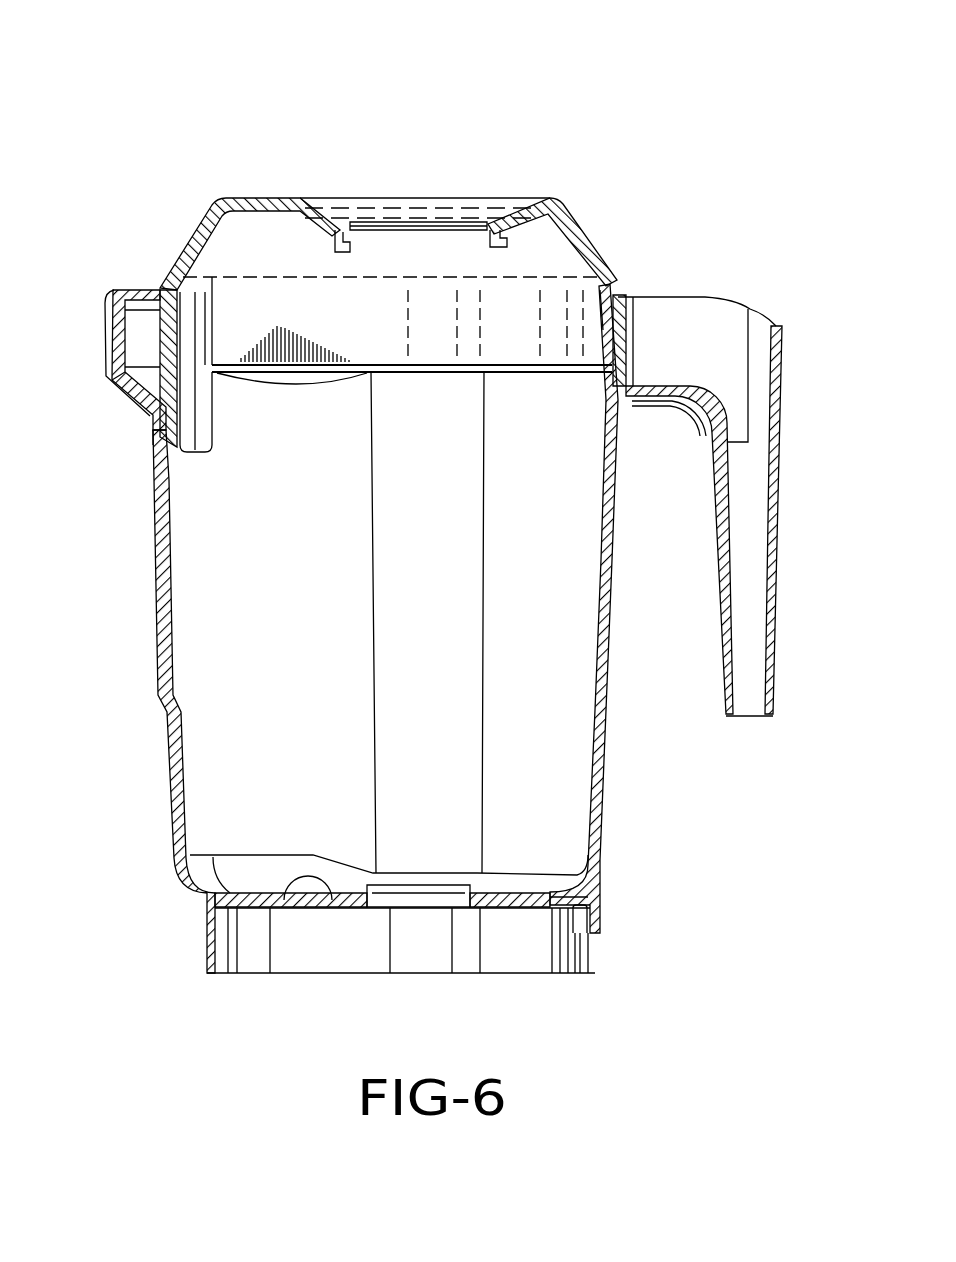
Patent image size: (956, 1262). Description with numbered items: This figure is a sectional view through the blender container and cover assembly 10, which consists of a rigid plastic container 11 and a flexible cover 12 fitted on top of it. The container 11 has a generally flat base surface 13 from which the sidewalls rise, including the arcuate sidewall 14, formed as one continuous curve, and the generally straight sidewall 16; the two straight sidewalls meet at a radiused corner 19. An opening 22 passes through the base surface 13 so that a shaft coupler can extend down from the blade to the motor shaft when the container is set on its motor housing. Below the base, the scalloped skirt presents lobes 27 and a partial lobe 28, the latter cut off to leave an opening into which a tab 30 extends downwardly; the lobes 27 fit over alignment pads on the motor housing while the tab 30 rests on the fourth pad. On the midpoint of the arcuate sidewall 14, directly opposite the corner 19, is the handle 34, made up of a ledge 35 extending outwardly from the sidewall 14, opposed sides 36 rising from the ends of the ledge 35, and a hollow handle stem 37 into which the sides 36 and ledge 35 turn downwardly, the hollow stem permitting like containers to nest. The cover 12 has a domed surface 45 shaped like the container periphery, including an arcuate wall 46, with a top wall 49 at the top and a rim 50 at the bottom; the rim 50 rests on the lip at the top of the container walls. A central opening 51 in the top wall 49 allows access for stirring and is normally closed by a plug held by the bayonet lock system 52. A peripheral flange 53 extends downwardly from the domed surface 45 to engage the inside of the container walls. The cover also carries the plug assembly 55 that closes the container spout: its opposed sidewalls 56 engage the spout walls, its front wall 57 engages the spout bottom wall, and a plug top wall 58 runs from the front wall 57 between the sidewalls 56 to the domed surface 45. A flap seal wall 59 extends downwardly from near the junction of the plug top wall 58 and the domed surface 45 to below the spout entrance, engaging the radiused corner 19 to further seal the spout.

The blender container and cover assembly 10 is at (108, 98).
The container 11 is at (246, 195).
The cover 12 is at (608, 768).
The base surface 13 is at (288, 896).
The sidewall 14 is at (611, 539).
The sidewall 16 is at (250, 645).
The radiused corner 19 is at (175, 760).
The opening 22 is at (418, 902).
The lobe 27 is at (208, 937).
The partial lobe 28 is at (595, 975).
The tab 30 is at (592, 875).
The handle 34 is at (799, 404).
The ledge 35 is at (663, 392).
The side 36 is at (694, 316).
The handle stem 37 is at (774, 600).
The domed surface 45 is at (535, 196).
The arcuate wall 46 is at (585, 258).
The top wall 49 is at (282, 200).
The rim 50 is at (600, 330).
The central opening 51 is at (410, 215).
The bayonet lock system 52 is at (375, 235).
The peripheral flange 53 is at (621, 335).
The plug assembly 55 is at (118, 415).
The sidewall 56 is at (120, 300).
The front wall 57 is at (111, 340).
The plug top wall 58 is at (146, 323).
The flap seal wall 59 is at (160, 447).